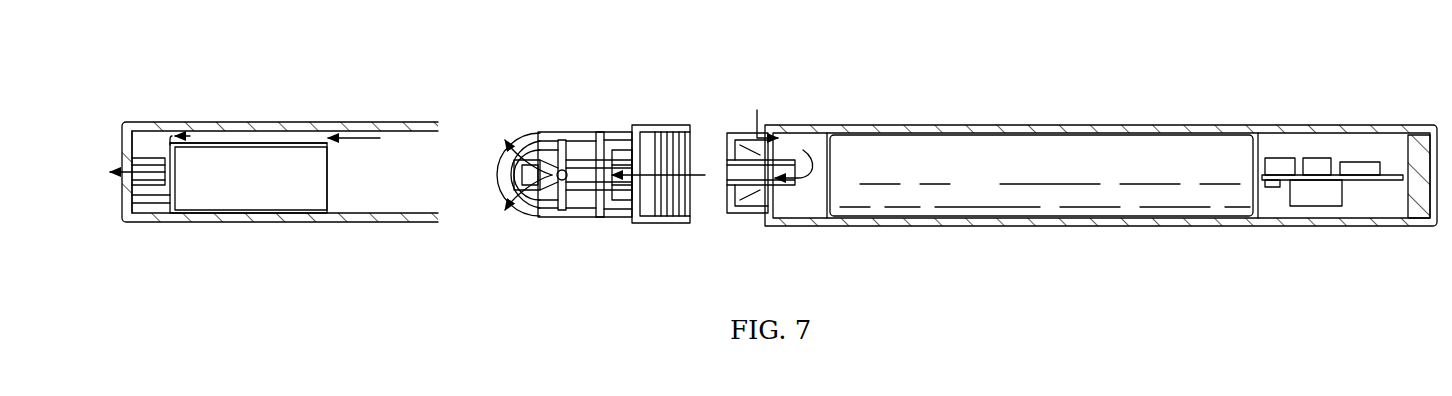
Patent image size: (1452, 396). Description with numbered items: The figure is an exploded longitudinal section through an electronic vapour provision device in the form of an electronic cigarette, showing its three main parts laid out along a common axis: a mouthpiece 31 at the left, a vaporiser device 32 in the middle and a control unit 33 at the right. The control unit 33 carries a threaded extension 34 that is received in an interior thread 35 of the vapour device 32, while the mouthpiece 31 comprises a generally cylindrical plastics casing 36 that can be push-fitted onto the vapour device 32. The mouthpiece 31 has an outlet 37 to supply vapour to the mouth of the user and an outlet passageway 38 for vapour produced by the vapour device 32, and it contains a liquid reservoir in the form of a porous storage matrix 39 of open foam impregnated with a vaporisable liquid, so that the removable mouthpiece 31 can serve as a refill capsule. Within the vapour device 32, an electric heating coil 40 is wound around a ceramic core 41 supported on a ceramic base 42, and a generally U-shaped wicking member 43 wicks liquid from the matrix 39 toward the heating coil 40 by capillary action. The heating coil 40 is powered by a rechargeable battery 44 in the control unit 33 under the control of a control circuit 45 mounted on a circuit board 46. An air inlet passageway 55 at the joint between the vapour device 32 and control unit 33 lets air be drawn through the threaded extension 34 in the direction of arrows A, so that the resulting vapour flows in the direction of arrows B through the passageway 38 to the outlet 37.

The mouthpiece 31 is at (272, 122).
The vaporiser device 32 is at (605, 132).
The control unit 33 is at (1058, 138).
The threaded extension 34 is at (741, 213).
The interior thread 35 is at (674, 223).
The plastics casing 36 is at (343, 122).
The outlet 37 is at (130, 165).
The outlet passageway 38 is at (222, 135).
The porous storage matrix 39 is at (257, 197).
The heating coil 40 is at (566, 205).
The ceramic core 41 is at (556, 140).
The ceramic base 42 is at (600, 217).
The U-shaped wicking member 43 is at (490, 190).
The rechargeable battery 44 is at (1098, 220).
The control circuit 45 is at (1370, 182).
The circuit board 46 is at (1340, 170).
The air inlet passageway 55 is at (806, 135).
The arrows A is at (806, 200).
The arrows B is at (520, 130).